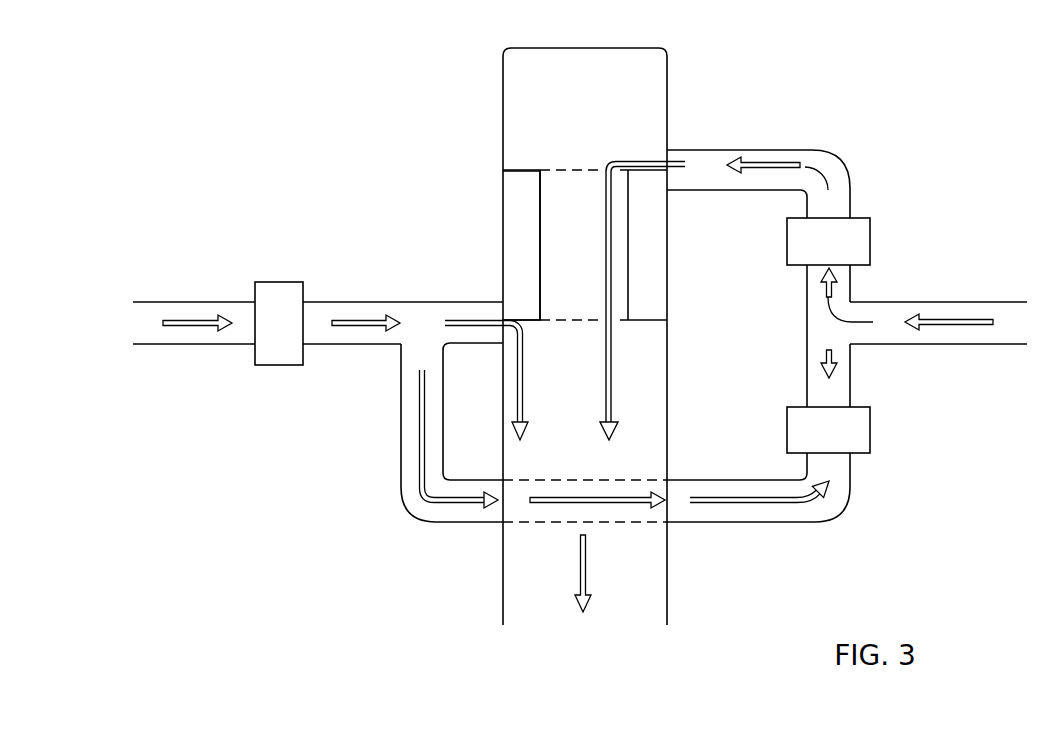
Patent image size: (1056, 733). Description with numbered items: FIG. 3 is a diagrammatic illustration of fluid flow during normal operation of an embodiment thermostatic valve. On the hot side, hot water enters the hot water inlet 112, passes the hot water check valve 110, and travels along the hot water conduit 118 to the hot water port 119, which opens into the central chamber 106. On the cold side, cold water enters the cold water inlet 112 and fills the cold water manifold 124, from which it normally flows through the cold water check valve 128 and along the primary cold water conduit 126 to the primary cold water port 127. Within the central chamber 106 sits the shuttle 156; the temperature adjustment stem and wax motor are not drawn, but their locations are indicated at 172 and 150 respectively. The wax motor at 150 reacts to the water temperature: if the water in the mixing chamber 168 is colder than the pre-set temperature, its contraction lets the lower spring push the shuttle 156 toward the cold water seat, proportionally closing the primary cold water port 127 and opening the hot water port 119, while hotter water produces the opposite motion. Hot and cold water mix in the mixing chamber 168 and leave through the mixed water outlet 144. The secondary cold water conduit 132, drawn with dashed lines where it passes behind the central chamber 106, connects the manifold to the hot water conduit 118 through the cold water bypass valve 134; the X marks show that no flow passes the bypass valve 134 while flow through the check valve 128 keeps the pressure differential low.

The central chamber 106 is at (553, 267).
The hot water check valve 110 is at (285, 281).
The hot water inlet / cold water inlet 112 is at (191, 313).
The hot water conduit 118 is at (370, 312).
The hot water port 119 is at (500, 311).
The cold water manifold 124 is at (816, 323).
The primary cold water conduit 126 is at (767, 155).
The primary cold water port 127 is at (667, 150).
The cold water check valve 128 is at (870, 237).
The secondary cold water conduit 132 is at (411, 452).
The cold water bypass valve 134 is at (870, 431).
The mixed water outlet 144 is at (612, 607).
The wax motor location 150 is at (555, 433).
The shuttle 156 is at (514, 192).
The mixing chamber 168 is at (574, 428).
The temperature adjustment stem location 172 is at (580, 68).